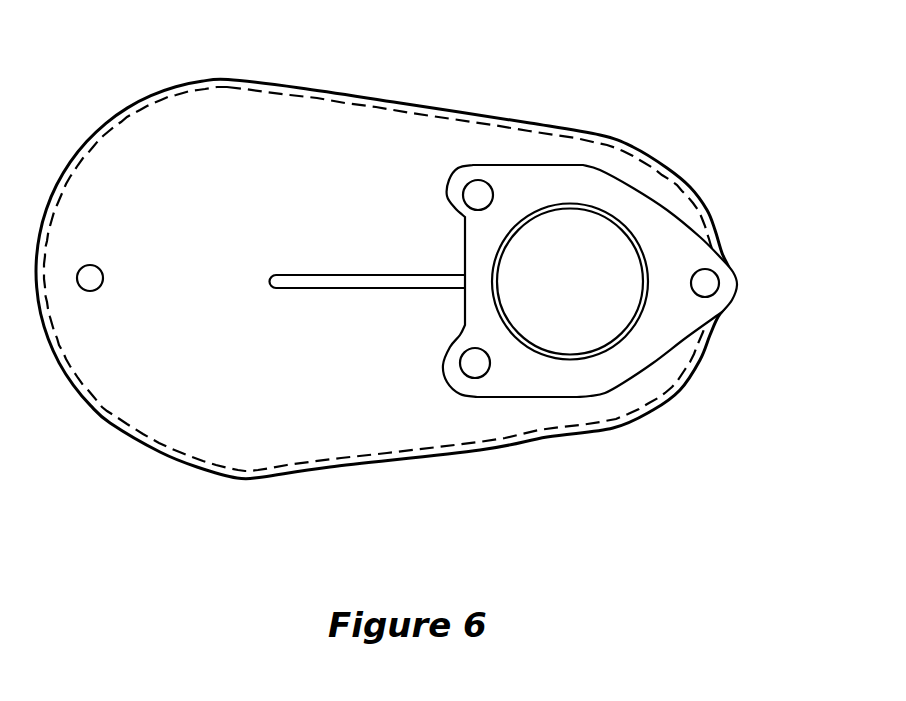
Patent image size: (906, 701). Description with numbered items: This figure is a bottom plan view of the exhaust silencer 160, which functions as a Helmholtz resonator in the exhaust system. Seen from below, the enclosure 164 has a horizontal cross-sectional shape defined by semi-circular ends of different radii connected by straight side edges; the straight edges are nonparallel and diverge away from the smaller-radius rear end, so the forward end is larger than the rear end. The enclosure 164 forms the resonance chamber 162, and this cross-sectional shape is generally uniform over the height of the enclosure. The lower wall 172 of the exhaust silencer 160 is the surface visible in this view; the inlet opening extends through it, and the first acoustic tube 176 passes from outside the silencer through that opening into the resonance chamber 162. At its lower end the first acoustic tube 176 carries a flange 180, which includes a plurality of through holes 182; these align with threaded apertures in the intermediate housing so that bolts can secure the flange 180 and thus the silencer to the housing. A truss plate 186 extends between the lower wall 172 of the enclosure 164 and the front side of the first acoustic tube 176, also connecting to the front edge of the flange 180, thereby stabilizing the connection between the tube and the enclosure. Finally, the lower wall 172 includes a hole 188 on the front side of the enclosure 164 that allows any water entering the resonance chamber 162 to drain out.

The exhaust silencer 160 is at (423, 273).
The resonance chamber 162 is at (357, 125).
The enclosure 164 is at (192, 448).
The lower wall 172 is at (322, 443).
The first acoustic tube 176 is at (618, 217).
The flange 180 is at (677, 250).
The through holes 182 is at (482, 200).
The truss plate 186 is at (306, 290).
The hole 188 is at (92, 291).